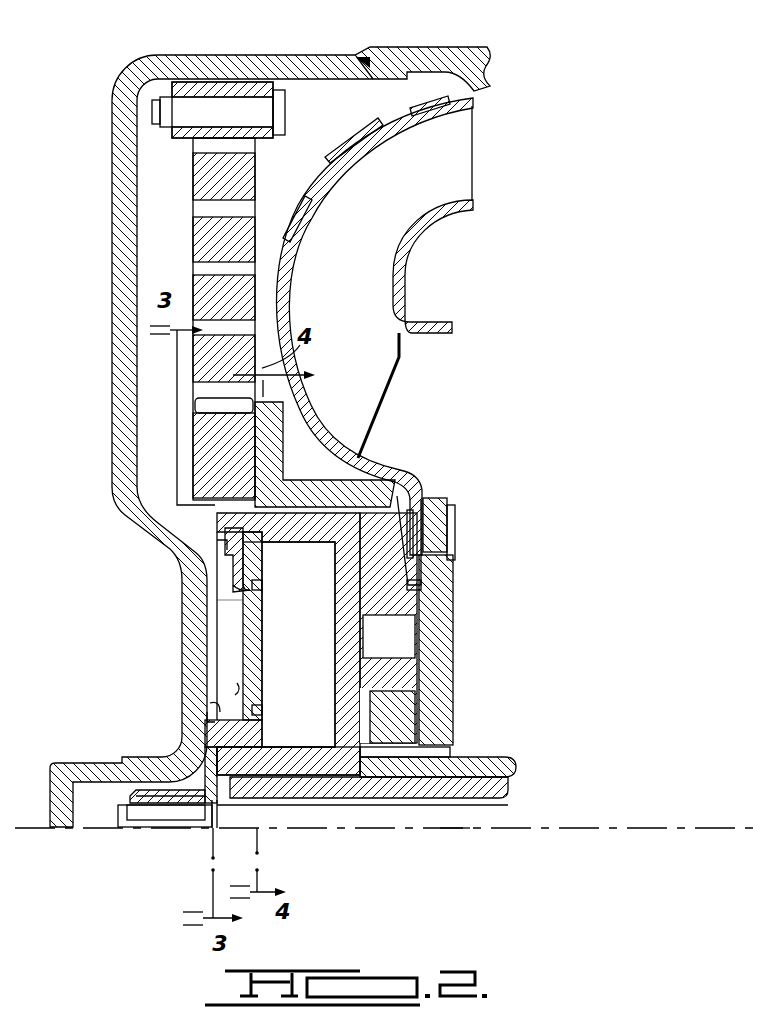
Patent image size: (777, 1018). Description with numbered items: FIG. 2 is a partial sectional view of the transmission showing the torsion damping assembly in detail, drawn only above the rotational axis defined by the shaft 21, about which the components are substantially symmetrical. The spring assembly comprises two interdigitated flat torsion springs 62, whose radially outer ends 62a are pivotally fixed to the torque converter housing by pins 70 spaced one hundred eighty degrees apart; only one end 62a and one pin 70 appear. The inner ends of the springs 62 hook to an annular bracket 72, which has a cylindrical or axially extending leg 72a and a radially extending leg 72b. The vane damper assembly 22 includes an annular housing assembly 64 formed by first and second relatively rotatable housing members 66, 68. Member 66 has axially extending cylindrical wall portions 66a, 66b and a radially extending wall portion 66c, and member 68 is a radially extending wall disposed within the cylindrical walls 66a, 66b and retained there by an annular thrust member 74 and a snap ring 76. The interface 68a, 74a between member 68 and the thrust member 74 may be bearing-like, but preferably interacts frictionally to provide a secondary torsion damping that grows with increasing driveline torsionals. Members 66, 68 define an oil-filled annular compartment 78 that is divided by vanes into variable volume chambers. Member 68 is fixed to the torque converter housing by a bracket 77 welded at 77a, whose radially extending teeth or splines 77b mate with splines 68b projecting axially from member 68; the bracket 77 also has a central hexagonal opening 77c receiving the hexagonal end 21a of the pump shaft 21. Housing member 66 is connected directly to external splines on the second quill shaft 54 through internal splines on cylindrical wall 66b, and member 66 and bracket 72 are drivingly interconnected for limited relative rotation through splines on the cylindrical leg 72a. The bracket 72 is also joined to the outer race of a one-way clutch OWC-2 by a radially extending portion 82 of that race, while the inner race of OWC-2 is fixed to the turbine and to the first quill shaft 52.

The torsion springs 62 is at (193, 448).
The radially outer ends of springs 62a is at (225, 82).
The pins 70 is at (160, 108).
The annular bracket 72 is at (288, 442).
The cylindrical leg 72a is at (355, 457).
The radially extending leg 72b is at (283, 412).
The first housing member 66 is at (210, 521).
The annular compartment 78 is at (298, 644).
The cylindrical wall portion 66a is at (252, 556).
The interface surface of housing member 68a is at (252, 585).
The teeth or splines 68b is at (255, 708).
The cylindrical wall portion 66b is at (293, 748).
The annular housing assembly 64 is at (230, 663).
The vane damper assembly 22 is at (230, 628).
The second housing member 68 is at (237, 683).
The annular thrust member 74 is at (233, 567).
The interface surface of thrust member 74a is at (250, 590).
The snap ring 76 is at (227, 544).
The radially extending teeth or splines 77b is at (215, 705).
The weld 77a is at (207, 712).
The radially extending wall portion 66c is at (358, 603).
The one-way clutch OWC-2 is at (398, 643).
The radially extending portion of race 82 is at (413, 530).
The first quill shaft 52 is at (515, 752).
The second quill shaft 54 is at (515, 790).
The bracket 77 is at (126, 800).
The hexagonal opening 77c is at (160, 803).
The hexagonal end of pump shaft 21a is at (187, 830).
The shaft 21 is at (455, 840).